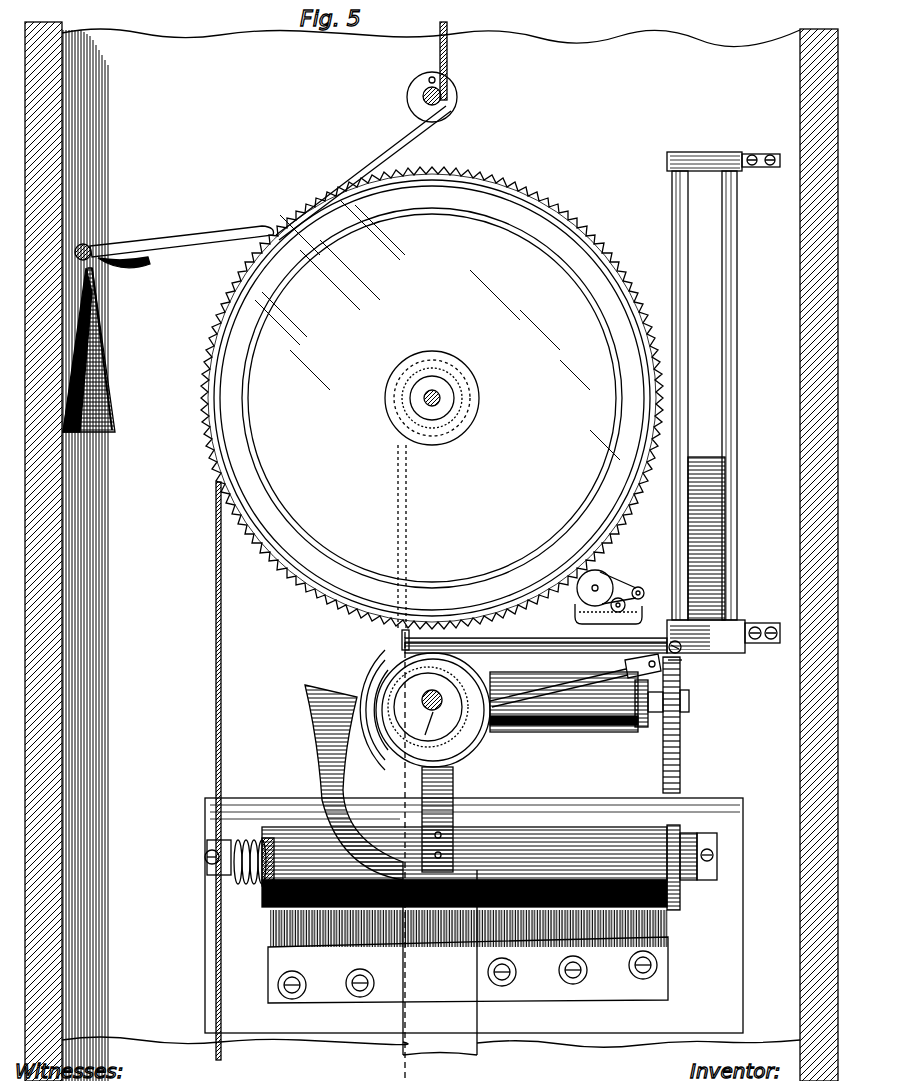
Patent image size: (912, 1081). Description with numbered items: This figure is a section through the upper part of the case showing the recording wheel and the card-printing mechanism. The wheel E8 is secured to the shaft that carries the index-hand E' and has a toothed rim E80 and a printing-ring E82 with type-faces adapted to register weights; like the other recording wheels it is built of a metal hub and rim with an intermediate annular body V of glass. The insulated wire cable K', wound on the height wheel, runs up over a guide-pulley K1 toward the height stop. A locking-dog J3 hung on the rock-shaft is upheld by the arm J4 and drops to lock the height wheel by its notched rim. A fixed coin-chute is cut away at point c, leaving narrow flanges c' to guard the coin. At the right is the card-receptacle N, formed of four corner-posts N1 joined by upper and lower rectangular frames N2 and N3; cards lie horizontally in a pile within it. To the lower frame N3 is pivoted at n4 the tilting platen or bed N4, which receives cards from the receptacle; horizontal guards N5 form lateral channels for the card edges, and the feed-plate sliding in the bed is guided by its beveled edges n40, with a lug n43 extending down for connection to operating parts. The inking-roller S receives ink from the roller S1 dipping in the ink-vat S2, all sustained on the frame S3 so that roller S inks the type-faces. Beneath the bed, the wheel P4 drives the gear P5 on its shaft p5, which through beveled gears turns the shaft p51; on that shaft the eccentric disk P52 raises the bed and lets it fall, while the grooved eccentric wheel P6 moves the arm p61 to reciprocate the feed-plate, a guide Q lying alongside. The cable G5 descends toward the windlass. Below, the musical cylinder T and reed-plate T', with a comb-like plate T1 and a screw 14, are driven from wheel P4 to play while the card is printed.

The guide pulley K1 is at (424, 112).
The insulated wire cable K' is at (205, 771).
The index-hand E' is at (451, 398).
The wheel E8 is at (432, 398).
The toothed rim E80 is at (243, 514).
The printing-ring E82 is at (286, 578).
The annular body V is at (507, 480).
The locking-dog J3 is at (212, 232).
The arm J4 is at (135, 272).
The point of cut-away c is at (100, 350).
The flanges c' is at (100, 361).
The card-receptacle N is at (738, 530).
The corner-posts N1 is at (727, 272).
The upper rectangular frame N2 is at (735, 163).
The lower rectangular frame N3 is at (723, 636).
The tilting platen or bed N4 is at (548, 650).
The horizontal flanges or guards N5 is at (528, 651).
The pivot n4 is at (681, 652).
The pin n43 is at (680, 672).
The beveled edges n40 is at (402, 637).
The inking-roller S is at (590, 582).
The roller S1 is at (618, 583).
The ink-vat S2 is at (641, 620).
The frame S3 is at (645, 596).
The disk or cam-wheel P52 is at (433, 710).
The shaft p51 is at (441, 723).
The eccentric wheel P6 is at (372, 684).
The gear P5 is at (686, 703).
The shaft p5 is at (618, 710).
The arm p61 is at (563, 682).
The wheel P4 is at (682, 771).
The guide chute Q is at (354, 782).
The cable G5 is at (404, 788).
The cylinder T is at (474, 915).
The reed-plate T' is at (692, 867).
The screw 14 is at (729, 881).
The comb plate T1 is at (468, 956).